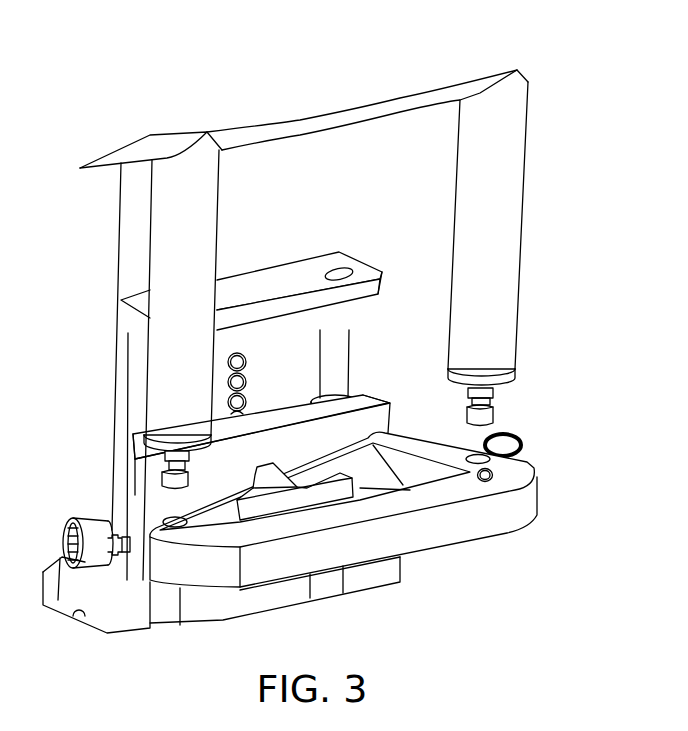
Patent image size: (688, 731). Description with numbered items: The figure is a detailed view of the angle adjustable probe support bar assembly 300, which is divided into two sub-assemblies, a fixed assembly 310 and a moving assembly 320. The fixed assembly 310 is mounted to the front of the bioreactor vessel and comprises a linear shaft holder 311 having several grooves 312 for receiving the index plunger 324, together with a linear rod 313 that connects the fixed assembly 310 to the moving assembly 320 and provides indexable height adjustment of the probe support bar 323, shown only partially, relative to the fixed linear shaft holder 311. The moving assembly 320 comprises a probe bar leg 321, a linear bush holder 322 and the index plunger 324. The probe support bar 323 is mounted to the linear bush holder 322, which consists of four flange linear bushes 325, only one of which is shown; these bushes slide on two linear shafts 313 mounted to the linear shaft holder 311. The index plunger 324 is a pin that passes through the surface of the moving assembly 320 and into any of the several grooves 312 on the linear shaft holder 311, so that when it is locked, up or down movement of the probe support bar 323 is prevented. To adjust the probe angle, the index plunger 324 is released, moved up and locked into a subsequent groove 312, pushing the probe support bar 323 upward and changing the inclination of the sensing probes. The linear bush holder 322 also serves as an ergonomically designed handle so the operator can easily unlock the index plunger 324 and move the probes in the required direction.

The angle adjustable probe support bar assembly 300 is at (242, 76).
The fixed assembly 310 is at (110, 373).
The linear shaft holder 311 is at (110, 412).
The grooves 312 is at (232, 409).
The linear rod 313 is at (353, 343).
The moving assembly 320 is at (505, 425).
The probe bar leg 321 is at (522, 242).
The linear bush holder 322 is at (495, 522).
The probe support bar 323 is at (333, 122).
The index plunger 324 is at (240, 497).
The flange linear bushes 325 is at (363, 390).